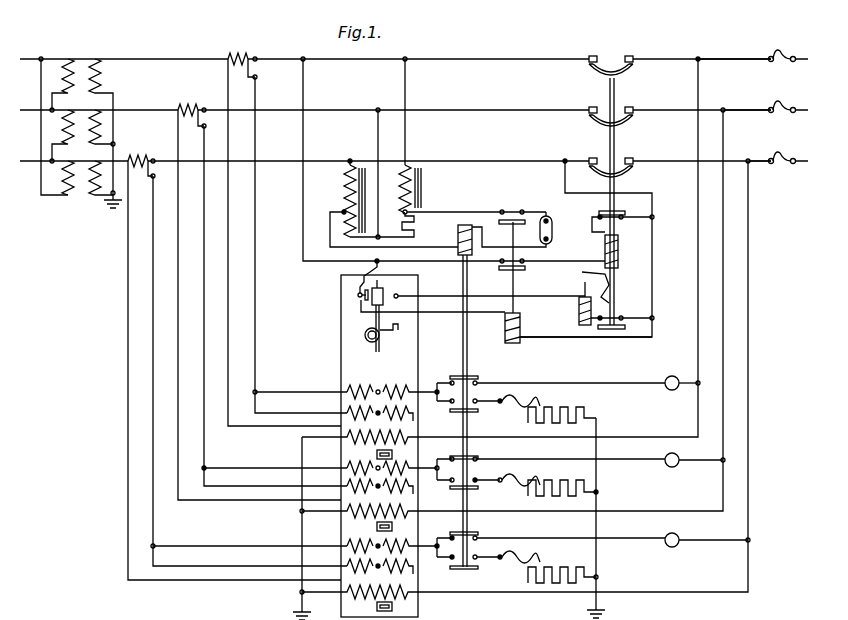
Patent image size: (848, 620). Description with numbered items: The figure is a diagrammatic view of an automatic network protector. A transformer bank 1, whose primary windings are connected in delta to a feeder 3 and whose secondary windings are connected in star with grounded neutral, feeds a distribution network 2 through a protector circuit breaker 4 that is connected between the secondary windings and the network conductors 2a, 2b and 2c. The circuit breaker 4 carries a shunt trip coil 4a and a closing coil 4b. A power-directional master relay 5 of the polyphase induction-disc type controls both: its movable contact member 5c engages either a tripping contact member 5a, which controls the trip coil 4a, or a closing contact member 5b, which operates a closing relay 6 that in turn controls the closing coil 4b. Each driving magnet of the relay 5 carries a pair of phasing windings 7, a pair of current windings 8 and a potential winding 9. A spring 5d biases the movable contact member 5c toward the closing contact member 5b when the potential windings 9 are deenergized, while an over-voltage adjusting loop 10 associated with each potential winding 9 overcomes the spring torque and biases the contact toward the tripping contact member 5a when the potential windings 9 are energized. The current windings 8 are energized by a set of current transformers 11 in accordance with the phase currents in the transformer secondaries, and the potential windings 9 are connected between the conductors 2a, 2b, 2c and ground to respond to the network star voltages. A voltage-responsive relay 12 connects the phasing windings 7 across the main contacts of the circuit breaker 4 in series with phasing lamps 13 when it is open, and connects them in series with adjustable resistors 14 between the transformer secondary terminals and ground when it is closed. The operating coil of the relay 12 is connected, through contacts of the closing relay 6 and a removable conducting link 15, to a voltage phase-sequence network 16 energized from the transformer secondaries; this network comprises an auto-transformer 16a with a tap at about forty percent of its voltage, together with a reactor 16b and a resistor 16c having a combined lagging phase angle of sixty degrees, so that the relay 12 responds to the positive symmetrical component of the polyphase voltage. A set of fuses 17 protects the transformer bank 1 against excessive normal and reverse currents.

The transformer bank 1 is at (92, 54).
The distribution network 2 is at (810, 57).
The network conductor 2a is at (747, 52).
The network conductor 2b is at (742, 103).
The network conductor 2c is at (752, 161).
The feeder 3 is at (40, 52).
The protector circuit breaker 4 is at (652, 101).
The shunt trip coil 4a is at (579, 309).
The closing coil 4b is at (619, 247).
The power-directional master relay 5 is at (445, 342).
The tripping contact member 5a is at (399, 295).
The closing contact member 5b is at (358, 296).
The movable contact member 5c is at (360, 303).
The spring 5d is at (364, 345).
The closing relay 6 is at (514, 344).
The phasing windings 7 is at (366, 389).
The current windings 8 is at (350, 412).
The potential winding 9 is at (350, 438).
The over-voltage adjusting loop 10 is at (392, 452).
The current transformers 11 is at (225, 51).
The voltage-responsive relay 12 is at (469, 366).
The phasing lamps 13 is at (672, 374).
The adjustable resistors 14 is at (553, 502).
The removable conducting link 15 is at (553, 233).
The voltage phase-sequence network 16 is at (438, 147).
The auto-transformer 16a is at (345, 191).
The reactor 16b is at (422, 190).
The resistor 16c is at (415, 228).
The fuses 17 is at (779, 54).